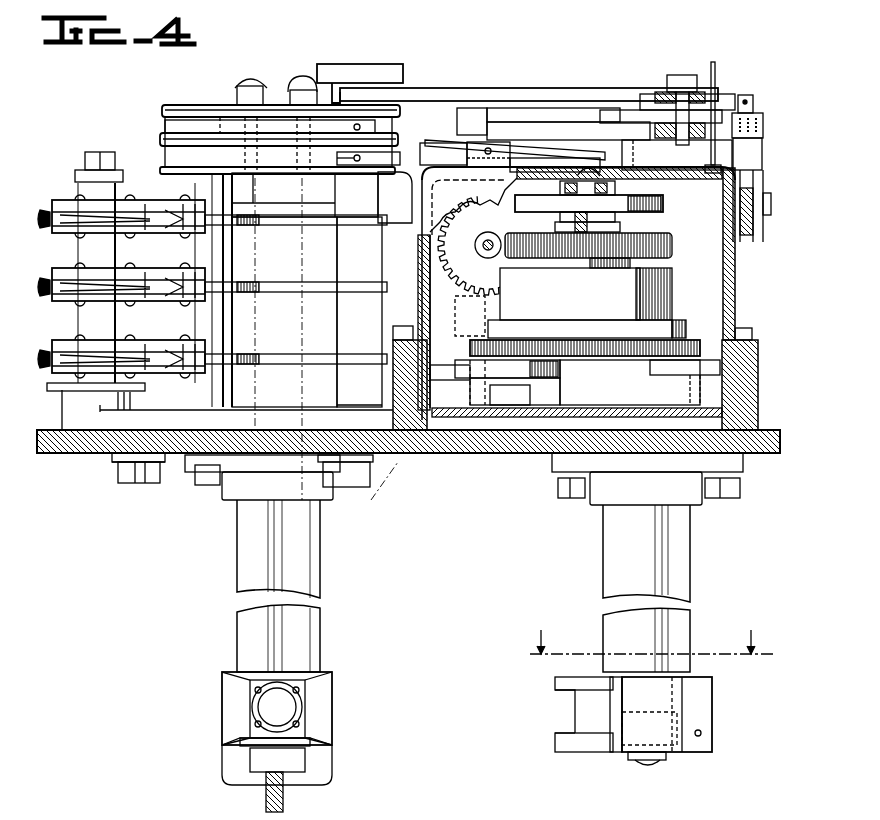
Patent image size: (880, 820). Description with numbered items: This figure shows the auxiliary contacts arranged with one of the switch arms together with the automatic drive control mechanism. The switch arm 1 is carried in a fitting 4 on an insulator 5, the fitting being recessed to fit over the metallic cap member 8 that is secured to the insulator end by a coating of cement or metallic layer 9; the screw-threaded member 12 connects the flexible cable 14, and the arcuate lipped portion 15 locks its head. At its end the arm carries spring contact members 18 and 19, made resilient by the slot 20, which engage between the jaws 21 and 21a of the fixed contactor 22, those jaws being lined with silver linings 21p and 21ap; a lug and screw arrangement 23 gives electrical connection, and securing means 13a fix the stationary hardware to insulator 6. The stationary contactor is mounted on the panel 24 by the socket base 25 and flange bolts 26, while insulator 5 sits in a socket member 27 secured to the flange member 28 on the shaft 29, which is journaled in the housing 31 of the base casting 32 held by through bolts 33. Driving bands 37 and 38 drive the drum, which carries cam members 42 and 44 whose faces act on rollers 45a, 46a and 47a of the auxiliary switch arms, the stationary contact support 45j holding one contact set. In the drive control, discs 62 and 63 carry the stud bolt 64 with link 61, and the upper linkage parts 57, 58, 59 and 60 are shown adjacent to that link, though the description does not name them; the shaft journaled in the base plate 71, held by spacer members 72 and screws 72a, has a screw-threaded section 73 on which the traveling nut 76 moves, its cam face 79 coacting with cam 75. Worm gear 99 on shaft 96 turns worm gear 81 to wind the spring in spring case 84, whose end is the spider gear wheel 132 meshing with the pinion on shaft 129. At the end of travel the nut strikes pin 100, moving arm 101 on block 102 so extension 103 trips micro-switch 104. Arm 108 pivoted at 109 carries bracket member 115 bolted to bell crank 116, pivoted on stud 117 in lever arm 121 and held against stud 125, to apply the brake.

The switch arm 1 is at (222, 748).
The fitting 4 is at (618, 740).
The insulator 5 is at (318, 568).
The insulator 6 is at (690, 572).
The metallic cap member 8 is at (642, 651).
The coating of cement or metallic layer 9 is at (330, 700).
The screw-threaded member 12 is at (305, 762).
The securing means 13a is at (703, 732).
The flexible cable 14 is at (266, 798).
The arcuate shaped lipped portion 15 is at (222, 765).
The spring contact member 18 is at (250, 688).
The spring contact member 19 is at (255, 718).
The slot 20 is at (252, 695).
The jaw 21 is at (315, 745).
The silver lining 21p is at (560, 700).
The jaw 21a is at (565, 750).
The silver lining 21ap is at (555, 735).
The fixed contactor 22 is at (672, 700).
The lug and screw arrangement 23 is at (648, 762).
The panel 24 is at (94, 455).
The socket base 25 is at (620, 490).
The flange bolts 26 is at (560, 482).
The socket member 27 is at (258, 490).
The flange member 28 is at (225, 470).
The shaft 29 is at (300, 345).
The housing 31 is at (310, 395).
The base casting 32 is at (135, 470).
The through bolts 33 is at (150, 465).
The driving band 37 is at (170, 122).
The driving band 38 is at (340, 162).
The cam member 42 is at (390, 218).
The cam member 44 is at (365, 368).
The roller member 45a is at (240, 180).
The stationary contact support 45j is at (50, 212).
The actuating roller 46a is at (215, 285).
The actuating roller 47a is at (215, 358).
The pivot pin 57 is at (357, 124).
The pin 58 is at (360, 155).
The dome cap 59 is at (248, 80).
The top block 60 is at (302, 72).
The link 61 is at (470, 87).
The disc 62 is at (505, 135).
The disc 63 is at (470, 120).
The stud bolt 64 is at (688, 75).
The base plate 71 is at (490, 440).
The spacer members 72 is at (445, 440).
The screws 72a is at (373, 495).
The screw-threaded section 73 is at (510, 215).
The cam 75 is at (474, 242).
The traveling nut 76 is at (660, 208).
The projecting cam face 79 is at (640, 229).
The worm gear 81 is at (568, 258).
The spring case 84 is at (635, 310).
The shaft 96 is at (467, 316).
The worm gear 99 is at (476, 245).
The pin 100 is at (588, 165).
The arm 101 is at (525, 140).
The block 102 is at (525, 148).
The extension 103 is at (428, 140).
The micro-switch 104 is at (380, 217).
The arm 108 is at (748, 240).
The pivot 109 is at (768, 208).
The bracket member 115 is at (762, 165).
The bell crank 116 is at (763, 118).
The pivot stud 117 is at (752, 95).
The lever arm 121 is at (660, 158).
The stud 125 is at (718, 150).
The shaft 129 is at (540, 392).
The spider gear wheel 132 is at (585, 338).